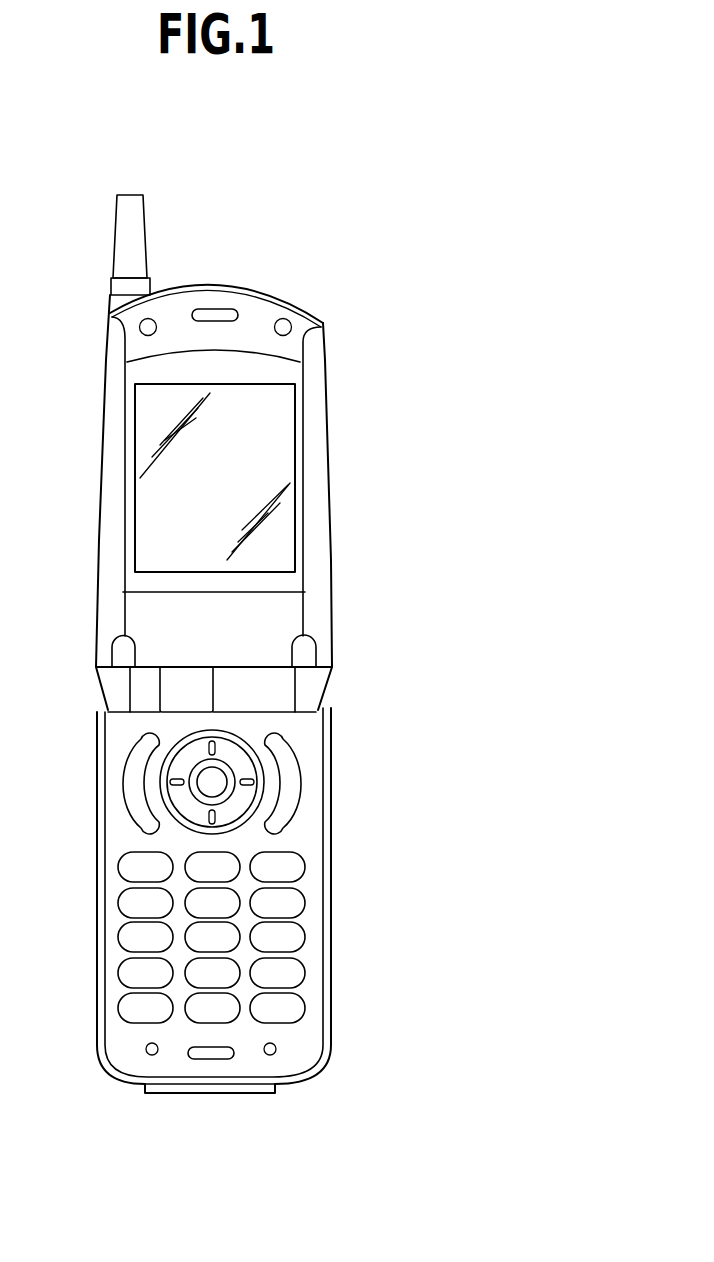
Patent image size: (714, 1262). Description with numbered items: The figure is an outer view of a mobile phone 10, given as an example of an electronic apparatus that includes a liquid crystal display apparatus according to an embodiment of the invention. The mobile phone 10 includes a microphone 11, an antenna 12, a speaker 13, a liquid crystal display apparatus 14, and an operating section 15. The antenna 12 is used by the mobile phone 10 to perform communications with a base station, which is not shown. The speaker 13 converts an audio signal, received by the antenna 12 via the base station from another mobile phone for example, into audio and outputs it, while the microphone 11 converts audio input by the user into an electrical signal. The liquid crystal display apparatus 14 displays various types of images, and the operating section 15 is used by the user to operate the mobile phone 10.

The mobile phone 10 is at (332, 197).
The microphone 11 is at (212, 1053).
The antenna 12 is at (146, 213).
The speaker 13 is at (216, 313).
The liquid crystal display apparatus 14 is at (270, 467).
The operating section 15 is at (120, 900).